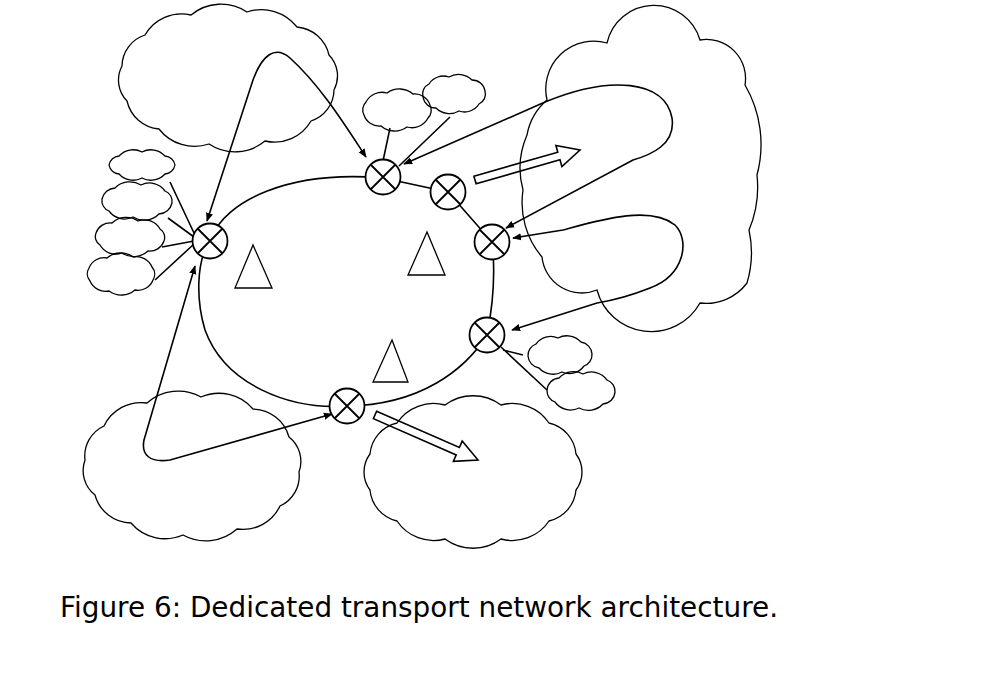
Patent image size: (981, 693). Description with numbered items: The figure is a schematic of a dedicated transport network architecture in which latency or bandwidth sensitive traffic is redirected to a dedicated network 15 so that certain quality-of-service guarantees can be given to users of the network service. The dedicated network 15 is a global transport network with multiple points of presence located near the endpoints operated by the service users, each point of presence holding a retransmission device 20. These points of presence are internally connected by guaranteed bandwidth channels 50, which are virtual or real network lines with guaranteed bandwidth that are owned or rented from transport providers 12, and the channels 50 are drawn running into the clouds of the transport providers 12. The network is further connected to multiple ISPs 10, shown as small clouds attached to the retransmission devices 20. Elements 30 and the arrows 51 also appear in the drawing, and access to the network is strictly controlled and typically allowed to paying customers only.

The ISP 10 is at (351, 242).
The transport provider 12 is at (422, 276).
The dedicated network 15 is at (346, 292).
The retransmission device 20 is at (341, 282).
The control element 30 is at (345, 296).
The guaranteed bandwidth channel 50 is at (411, 256).
The traffic flow arrow 51 is at (474, 304).